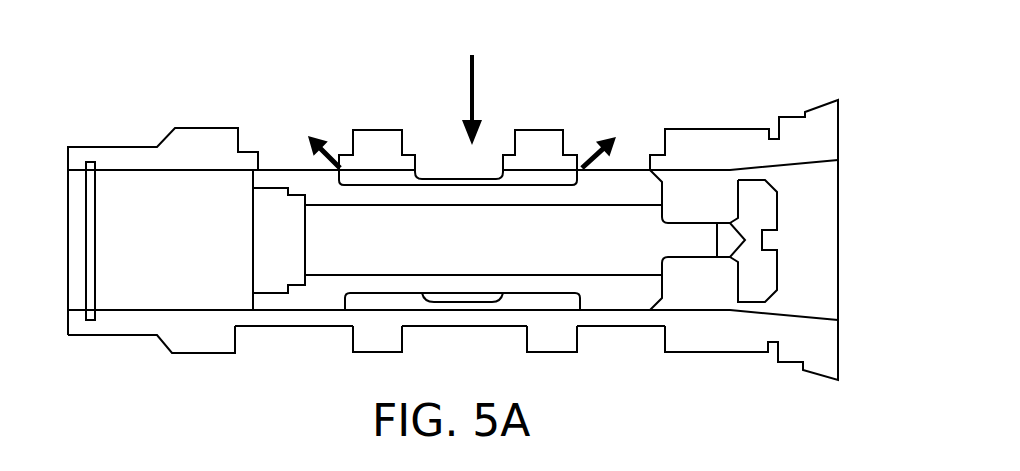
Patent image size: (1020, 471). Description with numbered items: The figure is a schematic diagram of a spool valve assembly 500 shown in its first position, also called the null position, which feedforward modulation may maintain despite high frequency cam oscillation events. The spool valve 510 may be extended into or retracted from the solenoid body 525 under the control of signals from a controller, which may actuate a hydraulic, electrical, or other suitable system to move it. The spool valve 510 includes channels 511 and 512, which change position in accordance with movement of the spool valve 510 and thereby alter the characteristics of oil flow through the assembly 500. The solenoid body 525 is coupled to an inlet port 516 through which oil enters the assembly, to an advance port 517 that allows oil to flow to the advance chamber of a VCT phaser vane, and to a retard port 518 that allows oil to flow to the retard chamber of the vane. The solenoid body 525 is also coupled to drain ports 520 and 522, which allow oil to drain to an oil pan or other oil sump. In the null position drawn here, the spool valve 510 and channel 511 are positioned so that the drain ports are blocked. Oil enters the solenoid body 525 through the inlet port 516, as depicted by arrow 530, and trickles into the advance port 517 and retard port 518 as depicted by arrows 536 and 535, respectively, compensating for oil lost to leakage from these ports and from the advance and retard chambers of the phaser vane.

The spool valve assembly 500 is at (752, 73).
The spool valve 510 is at (508, 263).
The channel 511 is at (397, 177).
The channel 512 is at (408, 295).
The inlet port 516 is at (452, 148).
The advance port 517 is at (630, 160).
The retard port 518 is at (298, 150).
The drain port 520 is at (279, 343).
The drain port 522 is at (617, 343).
The solenoid body 525 is at (716, 332).
The arrow 530 is at (490, 73).
The arrow 535 is at (330, 135).
The arrow 536 is at (600, 138).